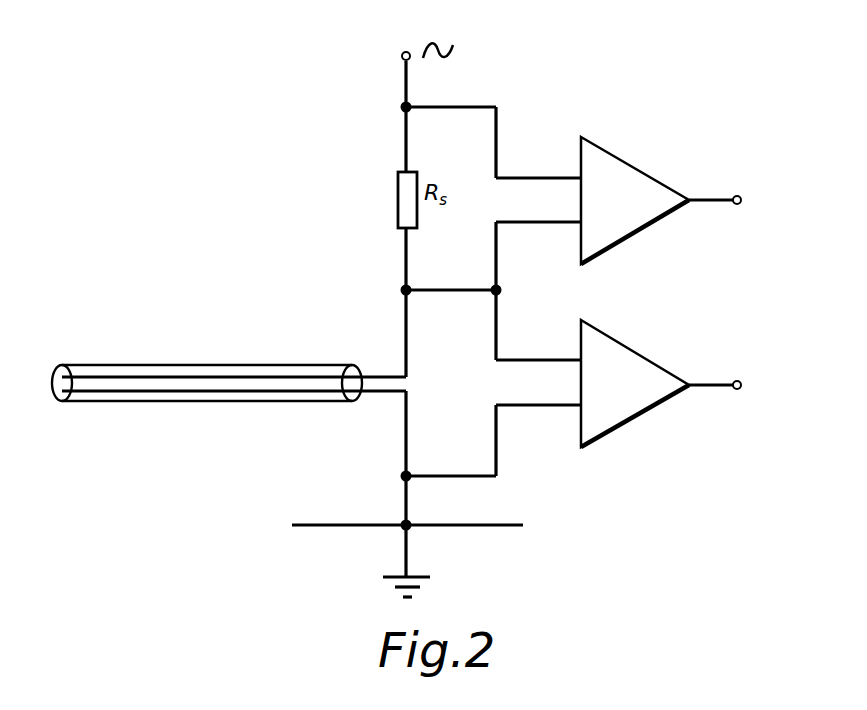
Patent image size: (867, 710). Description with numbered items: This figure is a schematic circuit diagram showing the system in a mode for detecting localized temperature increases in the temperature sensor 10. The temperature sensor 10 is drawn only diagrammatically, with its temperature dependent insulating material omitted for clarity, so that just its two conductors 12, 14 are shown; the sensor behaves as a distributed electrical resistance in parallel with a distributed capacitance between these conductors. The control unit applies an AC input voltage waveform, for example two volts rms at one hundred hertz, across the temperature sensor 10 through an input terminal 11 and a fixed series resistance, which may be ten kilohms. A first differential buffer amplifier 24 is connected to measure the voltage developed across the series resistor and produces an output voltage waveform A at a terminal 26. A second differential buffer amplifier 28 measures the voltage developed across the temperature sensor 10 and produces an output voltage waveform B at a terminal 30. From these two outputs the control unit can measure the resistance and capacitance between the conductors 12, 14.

The temperature sensor 10 is at (161, 354).
The input terminal 11 is at (400, 56).
The conductor 12 is at (386, 375).
The conductor 14 is at (383, 395).
The first differential buffer amplifier 24 is at (628, 160).
The terminal 26 is at (733, 206).
The second differential buffer amplifier 28 is at (630, 347).
The terminal 30 is at (733, 391).